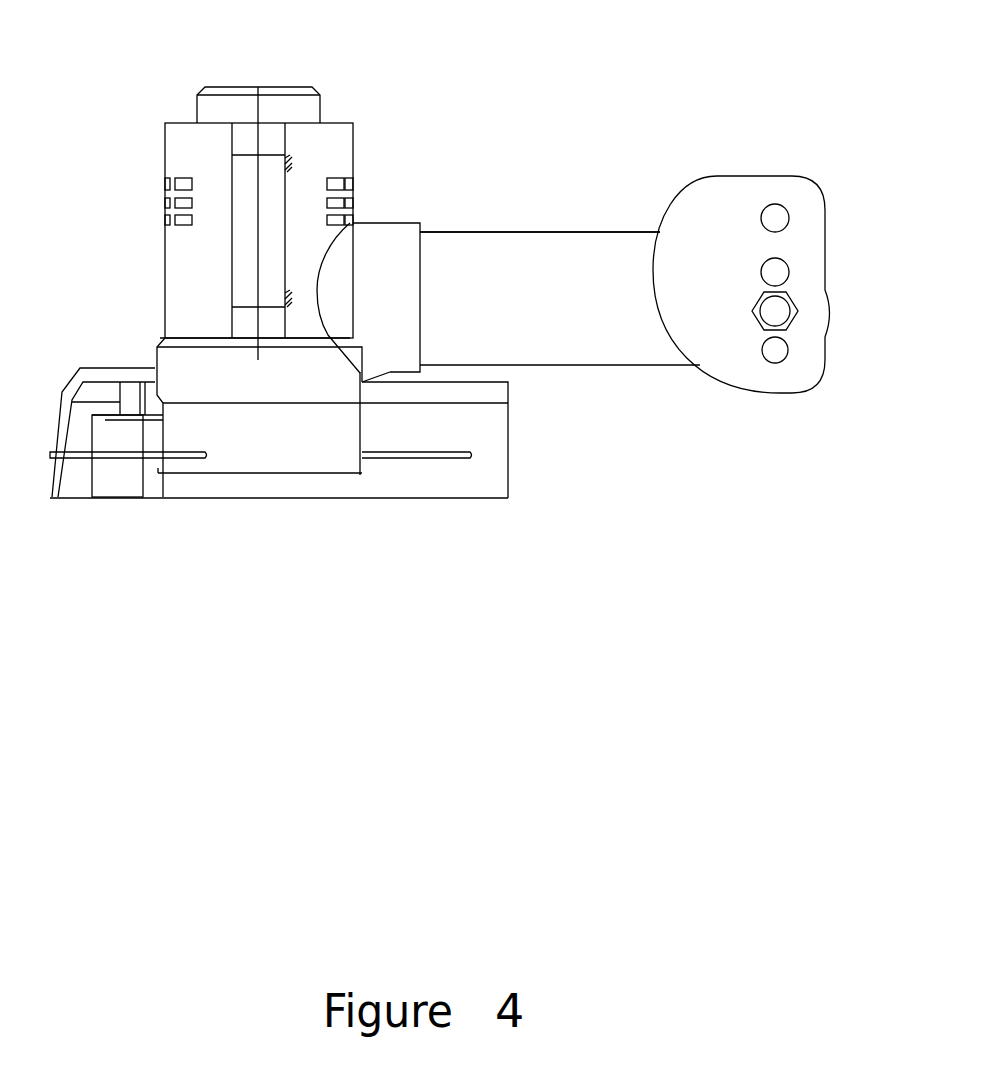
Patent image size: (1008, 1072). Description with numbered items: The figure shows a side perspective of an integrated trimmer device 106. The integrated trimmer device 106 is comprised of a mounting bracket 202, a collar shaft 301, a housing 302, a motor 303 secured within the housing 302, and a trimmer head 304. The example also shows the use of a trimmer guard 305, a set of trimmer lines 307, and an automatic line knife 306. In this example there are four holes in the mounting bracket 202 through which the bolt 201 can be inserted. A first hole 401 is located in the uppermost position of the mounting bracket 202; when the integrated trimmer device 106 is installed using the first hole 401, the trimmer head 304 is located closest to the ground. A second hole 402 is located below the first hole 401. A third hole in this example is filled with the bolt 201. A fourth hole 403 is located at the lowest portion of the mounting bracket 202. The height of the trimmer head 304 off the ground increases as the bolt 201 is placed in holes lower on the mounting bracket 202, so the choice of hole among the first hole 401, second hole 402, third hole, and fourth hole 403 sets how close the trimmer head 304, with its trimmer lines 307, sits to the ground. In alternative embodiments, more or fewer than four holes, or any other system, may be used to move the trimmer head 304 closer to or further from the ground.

The integrated trimmer device 106 is at (495, 229).
The bolt 201 is at (773, 318).
The mounting bracket 202 is at (723, 193).
The collar shaft 301 is at (560, 272).
The housing 302 is at (325, 258).
The motor 303 is at (177, 182).
The trimmer head 304 is at (262, 459).
The trimmer guard 305 is at (412, 501).
The automatic line knife 306 is at (143, 496).
The trimmer lines 307 is at (82, 461).
The first hole 401 is at (776, 217).
The second hole 402 is at (789, 283).
The fourth hole 403 is at (780, 371).